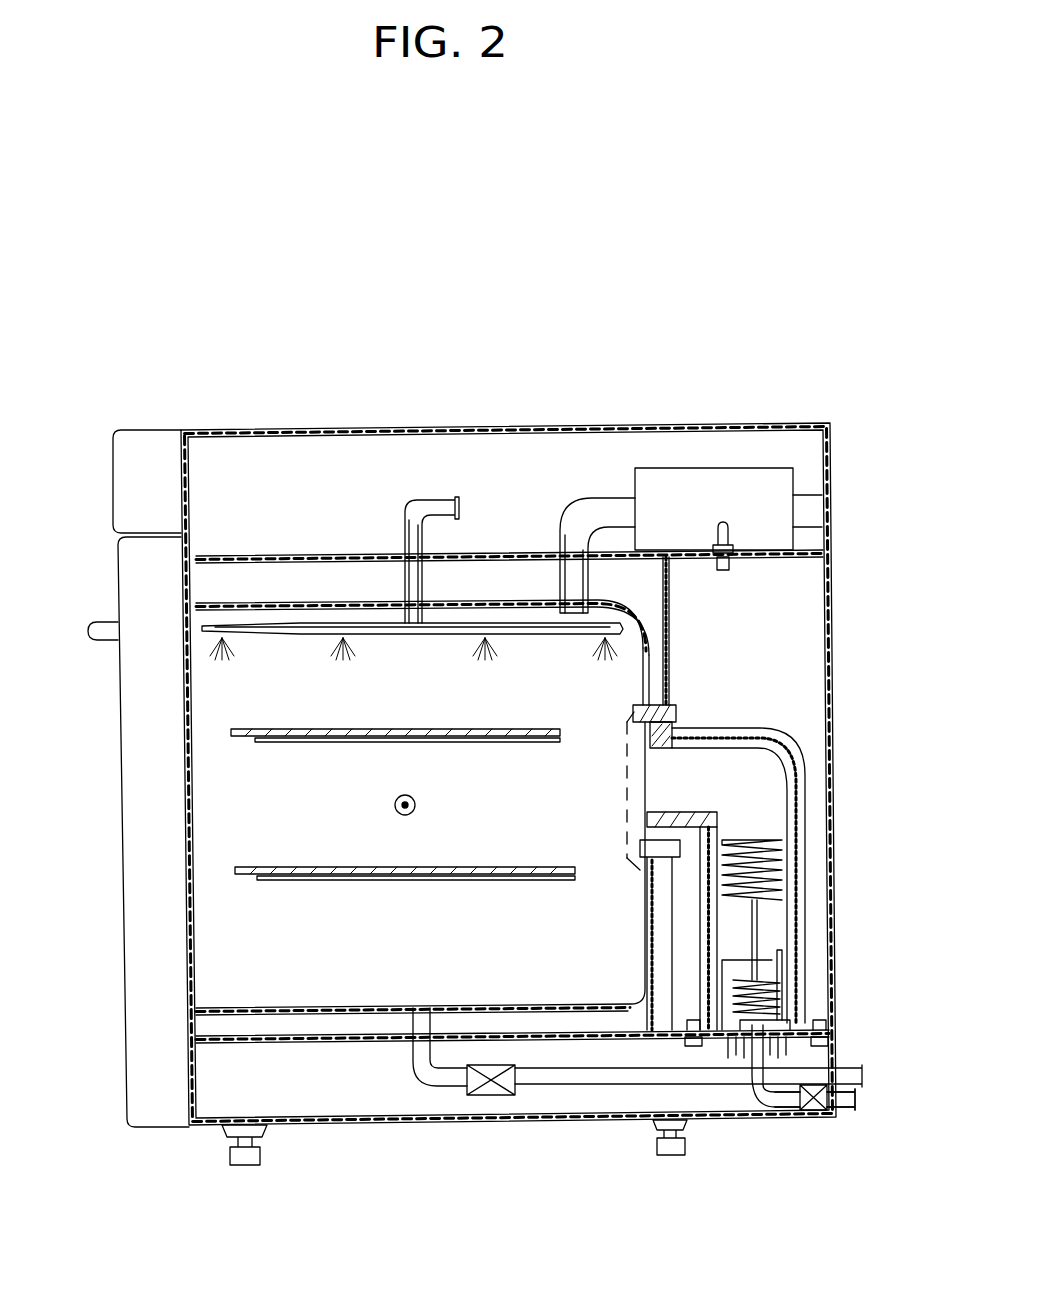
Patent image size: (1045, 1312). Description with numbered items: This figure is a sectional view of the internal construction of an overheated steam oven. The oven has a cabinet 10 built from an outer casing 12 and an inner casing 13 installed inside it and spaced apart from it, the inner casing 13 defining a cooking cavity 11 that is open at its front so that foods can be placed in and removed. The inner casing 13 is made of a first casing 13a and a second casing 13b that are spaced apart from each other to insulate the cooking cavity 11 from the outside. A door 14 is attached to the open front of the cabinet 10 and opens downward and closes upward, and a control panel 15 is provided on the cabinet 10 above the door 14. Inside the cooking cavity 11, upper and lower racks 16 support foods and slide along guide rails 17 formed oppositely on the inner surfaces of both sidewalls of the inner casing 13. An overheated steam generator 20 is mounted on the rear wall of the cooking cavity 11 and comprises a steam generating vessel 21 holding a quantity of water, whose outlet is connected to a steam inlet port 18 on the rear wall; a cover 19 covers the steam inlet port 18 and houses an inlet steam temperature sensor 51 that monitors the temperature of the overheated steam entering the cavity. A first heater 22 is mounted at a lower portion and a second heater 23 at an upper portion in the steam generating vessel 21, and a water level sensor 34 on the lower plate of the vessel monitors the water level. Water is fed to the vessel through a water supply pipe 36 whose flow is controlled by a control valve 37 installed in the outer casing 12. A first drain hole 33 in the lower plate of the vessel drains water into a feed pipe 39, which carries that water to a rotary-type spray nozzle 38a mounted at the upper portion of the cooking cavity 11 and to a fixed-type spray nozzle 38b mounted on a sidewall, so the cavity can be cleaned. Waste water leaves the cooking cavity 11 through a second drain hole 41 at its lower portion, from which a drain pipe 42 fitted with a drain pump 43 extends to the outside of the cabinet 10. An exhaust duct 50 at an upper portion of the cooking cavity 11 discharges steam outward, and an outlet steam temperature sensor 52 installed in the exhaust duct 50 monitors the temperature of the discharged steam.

The cabinet 10 is at (669, 398).
The cooking cavity 11 is at (492, 816).
The outer casing 12 is at (503, 427).
The inner casing 13 is at (311, 556).
The first casing 13a is at (270, 600).
The second casing 13b is at (345, 555).
The door 14 is at (130, 796).
The control panel 15 is at (150, 440).
The upper and lower racks 16 is at (278, 728).
The guide rails 17 is at (283, 744).
The steam inlet port 18 is at (640, 818).
The cover 19 is at (632, 707).
The overheated steam generator 20 is at (800, 760).
The steam generating vessel 21 is at (808, 818).
The first heater 22 is at (795, 990).
The second heater 23 is at (780, 852).
The first drain hole 33 is at (735, 1045).
The water level sensor 34 is at (805, 998).
The water supply pipe 36 is at (762, 1115).
The control valve 37 is at (812, 1118).
The rotary-type spray nozzle 38a is at (397, 636).
The fixed-type spray nozzle 38b is at (396, 808).
The feed pipe 39 is at (458, 481).
The second drain hole 41 is at (420, 1010).
The drain pipe 42 is at (425, 1090).
The drain pump 43 is at (492, 1096).
The exhaust duct 50 is at (605, 497).
The inlet steam temperature sensor 51 is at (630, 738).
The outlet steam temperature sensor 52 is at (724, 570).